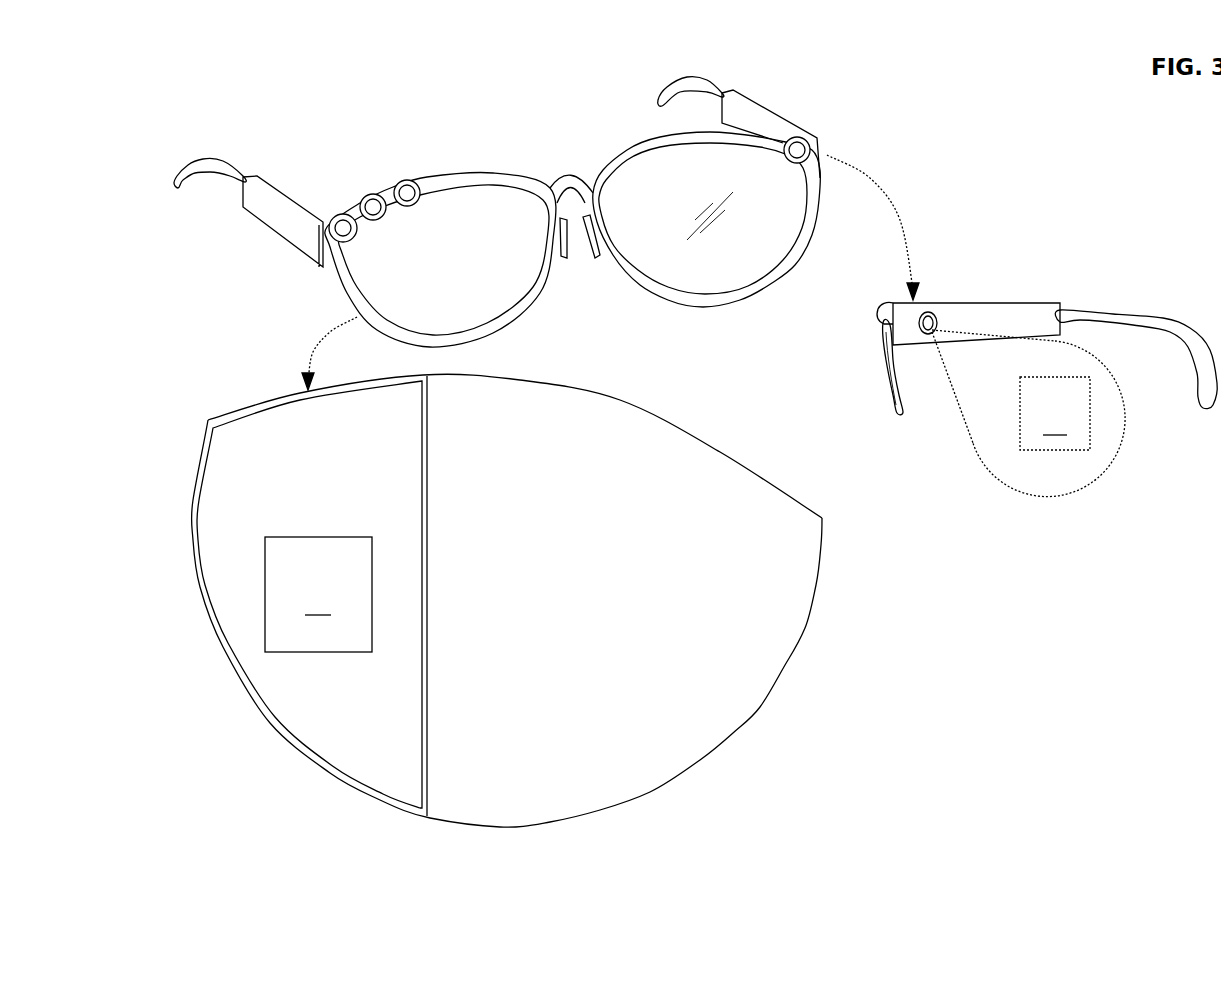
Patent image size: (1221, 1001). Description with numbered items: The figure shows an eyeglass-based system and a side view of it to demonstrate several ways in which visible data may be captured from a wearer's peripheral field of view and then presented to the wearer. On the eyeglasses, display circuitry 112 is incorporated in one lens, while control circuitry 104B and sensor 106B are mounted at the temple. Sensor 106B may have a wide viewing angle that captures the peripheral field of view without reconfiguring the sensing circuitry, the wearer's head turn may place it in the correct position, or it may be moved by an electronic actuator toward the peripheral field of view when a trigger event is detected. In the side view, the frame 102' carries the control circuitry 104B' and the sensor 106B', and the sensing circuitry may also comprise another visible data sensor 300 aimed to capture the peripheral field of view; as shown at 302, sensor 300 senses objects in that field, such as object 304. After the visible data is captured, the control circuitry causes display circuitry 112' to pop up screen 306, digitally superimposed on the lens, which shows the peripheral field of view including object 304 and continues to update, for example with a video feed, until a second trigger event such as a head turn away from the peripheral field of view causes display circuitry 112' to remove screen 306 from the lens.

The control circuitry 104B is at (744, 120).
The sensor 106B is at (824, 128).
The display circuitry 112 is at (465, 260).
The control circuitry 104B' is at (1055, 339).
The sensor 106B' is at (843, 330).
The frame 102' is at (863, 385).
The visible data sensor 300 is at (999, 278).
The sensing of the peripheral field of view 302 is at (927, 491).
The object 304 is at (677, 514).
The screen 306 is at (491, 703).
The display circuitry 112' is at (506, 600).